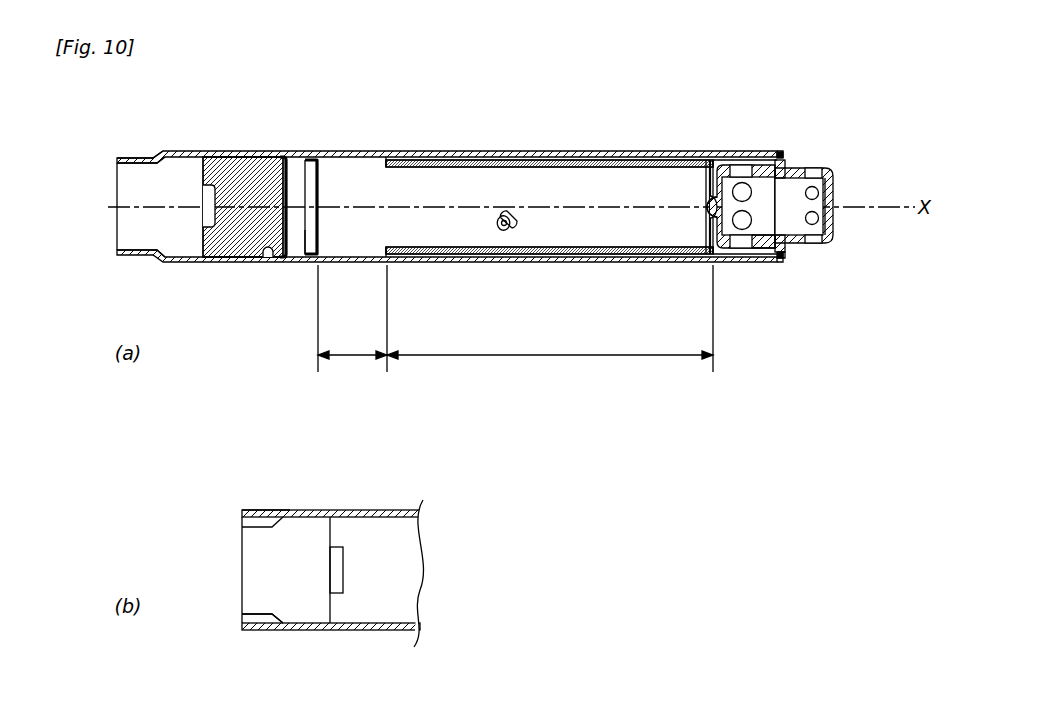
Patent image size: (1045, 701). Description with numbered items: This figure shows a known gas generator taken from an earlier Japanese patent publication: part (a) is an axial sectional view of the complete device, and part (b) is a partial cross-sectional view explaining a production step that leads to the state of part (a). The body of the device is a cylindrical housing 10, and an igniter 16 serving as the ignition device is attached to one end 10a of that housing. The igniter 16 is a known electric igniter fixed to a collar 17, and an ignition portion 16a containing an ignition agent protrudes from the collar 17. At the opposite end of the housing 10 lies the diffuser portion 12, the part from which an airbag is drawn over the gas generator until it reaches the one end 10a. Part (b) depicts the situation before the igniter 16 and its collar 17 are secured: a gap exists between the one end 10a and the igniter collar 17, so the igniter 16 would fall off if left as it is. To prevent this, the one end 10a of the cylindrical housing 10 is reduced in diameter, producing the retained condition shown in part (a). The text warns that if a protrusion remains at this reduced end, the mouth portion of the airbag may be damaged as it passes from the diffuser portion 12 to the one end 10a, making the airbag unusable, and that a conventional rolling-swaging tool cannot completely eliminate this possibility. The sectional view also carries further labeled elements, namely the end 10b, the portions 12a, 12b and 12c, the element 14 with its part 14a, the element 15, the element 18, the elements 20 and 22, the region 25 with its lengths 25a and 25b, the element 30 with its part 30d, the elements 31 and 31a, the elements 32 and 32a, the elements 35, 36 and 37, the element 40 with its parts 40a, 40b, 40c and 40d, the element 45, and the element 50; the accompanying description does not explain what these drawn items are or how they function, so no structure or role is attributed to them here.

The cylindrical housing 10 is at (450, 152).
The one end of the cylindrical housing 10a is at (140, 157).
The second end of outer tube 10b is at (781, 263).
The diffuser portion 12 is at (838, 186).
The cap flange 12a is at (788, 250).
The cap lower wall 12b is at (826, 242).
The cap end wall 12c is at (833, 193).
The piston seal 14 is at (287, 172).
The piston seal notch 14a is at (262, 258).
The cap slot 15 is at (813, 170).
The igniter 16 is at (133, 228).
The ignition portion 16a is at (207, 228).
The collar 17 is at (168, 243).
The gap 18 is at (293, 220).
The piston 20 is at (220, 158).
The piston body 22 is at (243, 207).
The chamber 25 is at (515, 191).
The first chamber length 25a is at (352, 326).
The second chamber length 25b is at (550, 326).
The inner tube 30 is at (512, 162).
The inner tube projection 30d is at (706, 199).
The inner tube end 31 is at (385, 256).
The inner tube end step 31a is at (386, 157).
The ring 32 is at (320, 178).
The ring flange 32a is at (305, 250).
The upper lining 35 is at (601, 160).
The inner tube end portion 36 is at (728, 160).
The lower lining 37 is at (650, 248).
The end member 40 is at (735, 214).
The end member lower slot 40a is at (718, 256).
The end member lower wall 40b is at (770, 249).
The end member upper slot 40c is at (742, 165).
The end member recess 40d is at (705, 214).
The spacer ring 45 is at (777, 195).
The ball 50 is at (507, 232).